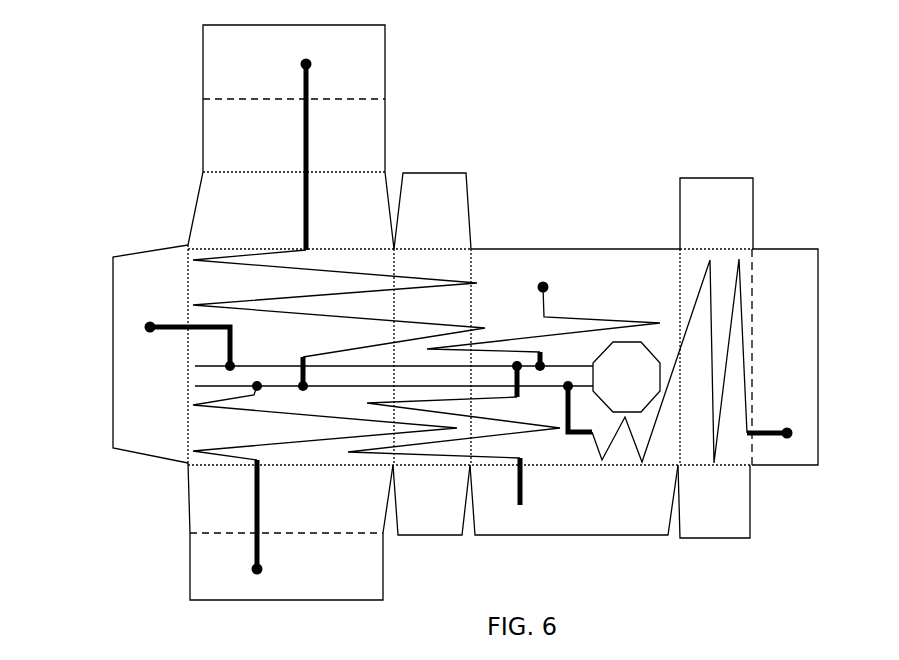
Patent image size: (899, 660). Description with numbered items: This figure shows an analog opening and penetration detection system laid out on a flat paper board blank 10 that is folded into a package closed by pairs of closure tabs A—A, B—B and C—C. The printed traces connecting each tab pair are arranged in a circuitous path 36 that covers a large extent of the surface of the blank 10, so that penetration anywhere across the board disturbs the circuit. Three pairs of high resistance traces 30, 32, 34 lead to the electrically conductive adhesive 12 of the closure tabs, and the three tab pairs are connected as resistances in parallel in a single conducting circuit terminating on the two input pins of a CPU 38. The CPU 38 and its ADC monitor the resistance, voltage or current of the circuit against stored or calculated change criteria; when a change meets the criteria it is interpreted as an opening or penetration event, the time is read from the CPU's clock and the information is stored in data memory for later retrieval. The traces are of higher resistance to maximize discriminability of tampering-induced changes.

The blank 10 is at (566, 162).
The electrically conductive adhesive 12 is at (146, 295).
The pair of high resistance traces 30 is at (150, 325).
The pair of high resistance traces 32 is at (253, 493).
The pair of high resistance traces 34 is at (310, 163).
The circuitous path 36 is at (445, 253).
The CPU 38 is at (633, 363).